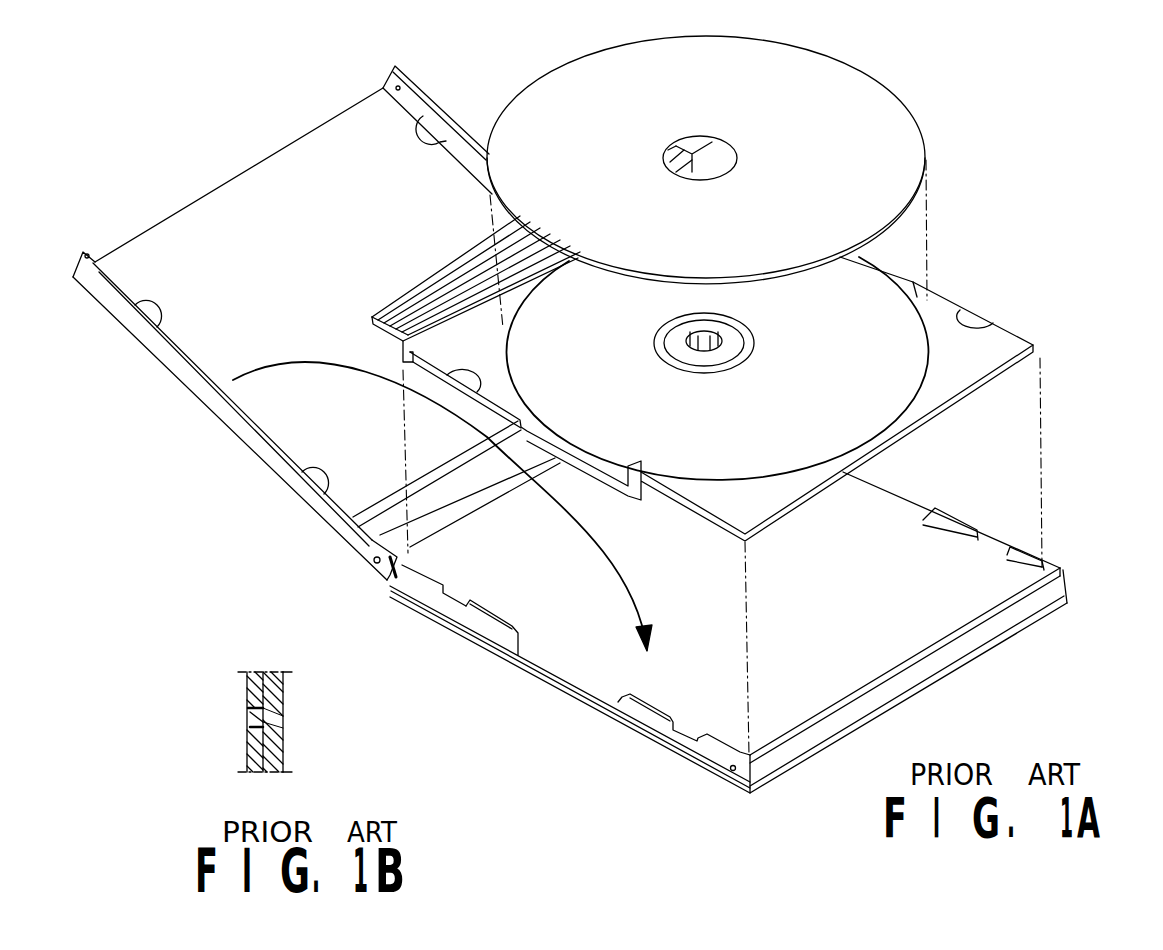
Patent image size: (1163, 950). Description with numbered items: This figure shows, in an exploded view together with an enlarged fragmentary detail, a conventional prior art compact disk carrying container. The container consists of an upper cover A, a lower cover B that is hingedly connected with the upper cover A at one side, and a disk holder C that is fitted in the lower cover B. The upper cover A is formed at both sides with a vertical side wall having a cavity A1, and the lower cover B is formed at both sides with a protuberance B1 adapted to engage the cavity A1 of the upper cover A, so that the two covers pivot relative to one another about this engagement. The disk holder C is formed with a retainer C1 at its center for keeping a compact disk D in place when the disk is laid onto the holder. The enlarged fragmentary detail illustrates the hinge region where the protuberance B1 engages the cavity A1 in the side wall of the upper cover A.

In FIG. 1A, the upper cover A is at (210, 398).
In FIG. 1B, the upper cover A is at (245, 692).
In FIG. 1A, the cavity A1 is at (430, 613).
In FIG. 1B, the cavity A1 is at (249, 727).
In FIG. 1A, the lower cover B is at (600, 668).
In FIG. 1B, the lower cover B is at (276, 697).
In FIG. 1A, the protuberance B1 is at (373, 559).
In FIG. 1B, the protuberance B1 is at (284, 713).
In FIG. 1A, the disk holder C is at (993, 326).
In FIG. 1A, the retainer C1 is at (770, 322).
In FIG. 1A, the compact disc D is at (905, 153).